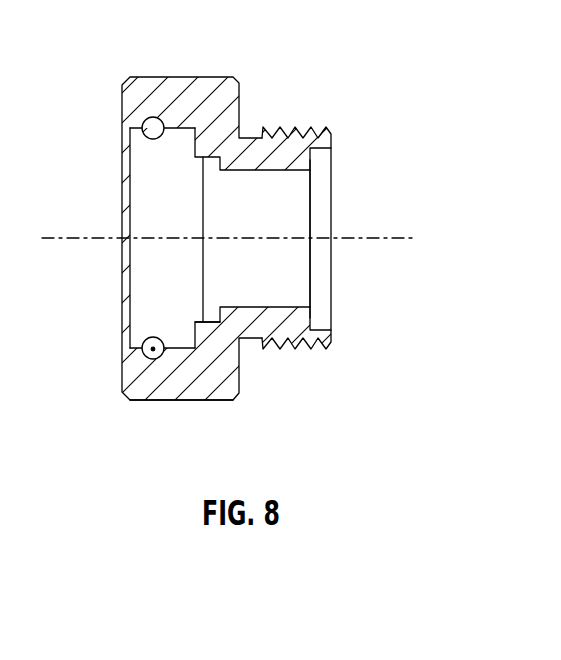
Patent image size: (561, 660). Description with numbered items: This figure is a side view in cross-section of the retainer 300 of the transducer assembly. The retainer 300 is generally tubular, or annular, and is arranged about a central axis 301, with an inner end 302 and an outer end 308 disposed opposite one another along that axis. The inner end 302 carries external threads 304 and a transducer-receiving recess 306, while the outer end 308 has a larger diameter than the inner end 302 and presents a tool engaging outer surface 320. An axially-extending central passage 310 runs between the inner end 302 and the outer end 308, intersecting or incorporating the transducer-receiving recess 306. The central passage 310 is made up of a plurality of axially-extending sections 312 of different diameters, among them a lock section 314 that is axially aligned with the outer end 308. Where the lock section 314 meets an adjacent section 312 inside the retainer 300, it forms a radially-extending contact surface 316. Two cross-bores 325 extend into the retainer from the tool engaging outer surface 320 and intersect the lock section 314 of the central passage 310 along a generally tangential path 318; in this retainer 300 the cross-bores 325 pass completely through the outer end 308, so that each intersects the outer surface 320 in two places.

The retainer 300 is at (198, 82).
The central axis 301 is at (385, 238).
The inner end 302 is at (333, 145).
The external threads 304 is at (318, 128).
The transducer-receiving recess 306 is at (323, 160).
The outer end 308 is at (143, 392).
The central passage 310 is at (147, 285).
The axially-extending sections 312 is at (198, 190).
The lock section 314 is at (147, 225).
The contact surface 316 is at (183, 337).
The tangential path 318 is at (153, 349).
The tool engaging outer surface 320 is at (195, 401).
The cross-bores 325 is at (145, 121).